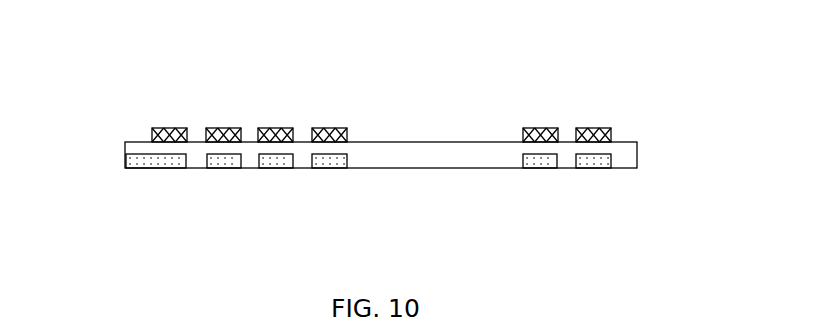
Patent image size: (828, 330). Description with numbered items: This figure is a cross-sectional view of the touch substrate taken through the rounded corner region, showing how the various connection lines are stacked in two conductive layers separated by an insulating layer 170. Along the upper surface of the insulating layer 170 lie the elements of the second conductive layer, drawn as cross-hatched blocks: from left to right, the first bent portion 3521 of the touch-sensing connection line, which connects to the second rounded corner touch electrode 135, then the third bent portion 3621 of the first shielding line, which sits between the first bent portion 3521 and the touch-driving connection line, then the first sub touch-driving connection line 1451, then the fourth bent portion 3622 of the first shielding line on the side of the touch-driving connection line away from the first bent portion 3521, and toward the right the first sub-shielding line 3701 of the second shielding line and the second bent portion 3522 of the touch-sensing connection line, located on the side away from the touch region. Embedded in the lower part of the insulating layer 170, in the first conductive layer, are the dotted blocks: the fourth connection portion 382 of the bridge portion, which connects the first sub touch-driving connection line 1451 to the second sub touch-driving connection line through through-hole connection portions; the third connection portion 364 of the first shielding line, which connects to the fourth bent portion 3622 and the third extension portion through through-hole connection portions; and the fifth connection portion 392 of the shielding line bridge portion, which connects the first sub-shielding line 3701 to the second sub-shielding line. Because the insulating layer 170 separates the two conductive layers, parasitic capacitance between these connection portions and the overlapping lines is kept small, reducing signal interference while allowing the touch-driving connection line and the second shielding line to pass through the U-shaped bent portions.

The insulating layer 170 is at (450, 162).
The first bent portion 3521 is at (165, 130).
The third bent portion 3621 is at (213, 128).
The first sub touch-driving connection line 1451 is at (277, 128).
The fourth bent portion 3622 is at (328, 128).
The first sub-shielding line 3701 is at (538, 128).
The second bent portion 3522 is at (597, 128).
The second rounded corner touch electrode 135 is at (172, 168).
The fourth connection portion 382 is at (275, 168).
The third connection portion 364 is at (330, 168).
The fifth connection portion 392 is at (538, 168).